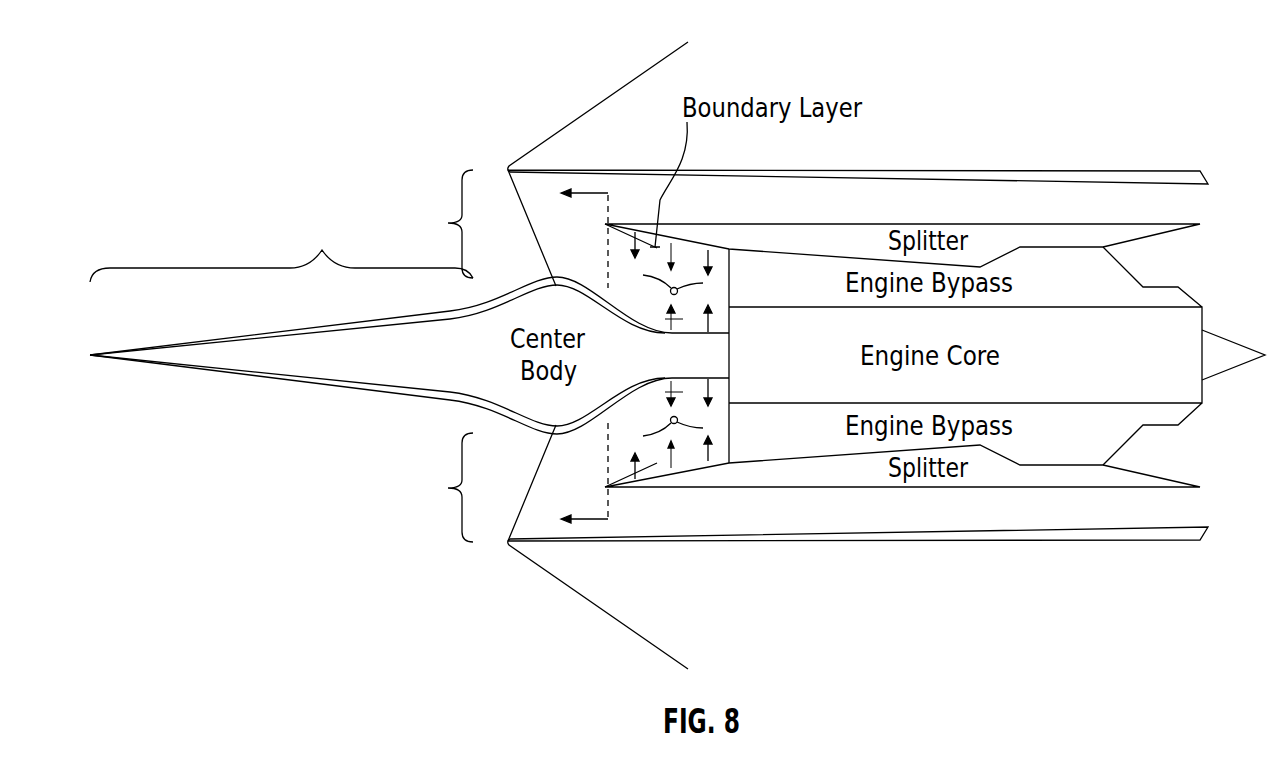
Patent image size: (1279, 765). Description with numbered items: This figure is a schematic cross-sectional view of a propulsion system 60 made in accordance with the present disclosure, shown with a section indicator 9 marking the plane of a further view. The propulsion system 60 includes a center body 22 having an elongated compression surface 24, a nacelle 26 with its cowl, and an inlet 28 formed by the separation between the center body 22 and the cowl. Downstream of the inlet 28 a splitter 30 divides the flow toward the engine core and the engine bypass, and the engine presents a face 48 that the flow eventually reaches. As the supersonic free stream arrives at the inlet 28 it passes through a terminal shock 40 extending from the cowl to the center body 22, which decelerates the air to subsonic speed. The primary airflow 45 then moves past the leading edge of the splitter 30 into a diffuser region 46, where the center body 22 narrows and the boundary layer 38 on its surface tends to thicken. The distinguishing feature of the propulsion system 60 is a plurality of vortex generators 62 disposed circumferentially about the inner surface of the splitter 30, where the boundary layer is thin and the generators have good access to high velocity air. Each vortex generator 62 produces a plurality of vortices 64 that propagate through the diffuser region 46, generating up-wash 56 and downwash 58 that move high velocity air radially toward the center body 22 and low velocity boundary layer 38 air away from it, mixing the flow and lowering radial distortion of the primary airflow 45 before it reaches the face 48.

The section view indicator 9 is at (575, 355).
The center body 22 is at (412, 375).
The elongated compression surface 24 is at (377, 321).
The nacelle 26 is at (789, 163).
The inlet 28 is at (444, 356).
The splitter 30 is at (786, 222).
The boundary layer 38 is at (447, 312).
The terminal shock 40 is at (535, 480).
The primary airflow 45 is at (546, 474).
The diffuser region 46 is at (618, 436).
The face 48 is at (740, 400).
The up-wash 56 is at (712, 388).
The downwash 58 is at (712, 443).
The propulsion system 60 is at (1143, 602).
The plurality of vortex generators 62 is at (637, 479).
The plurality of vortices 64 is at (676, 423).